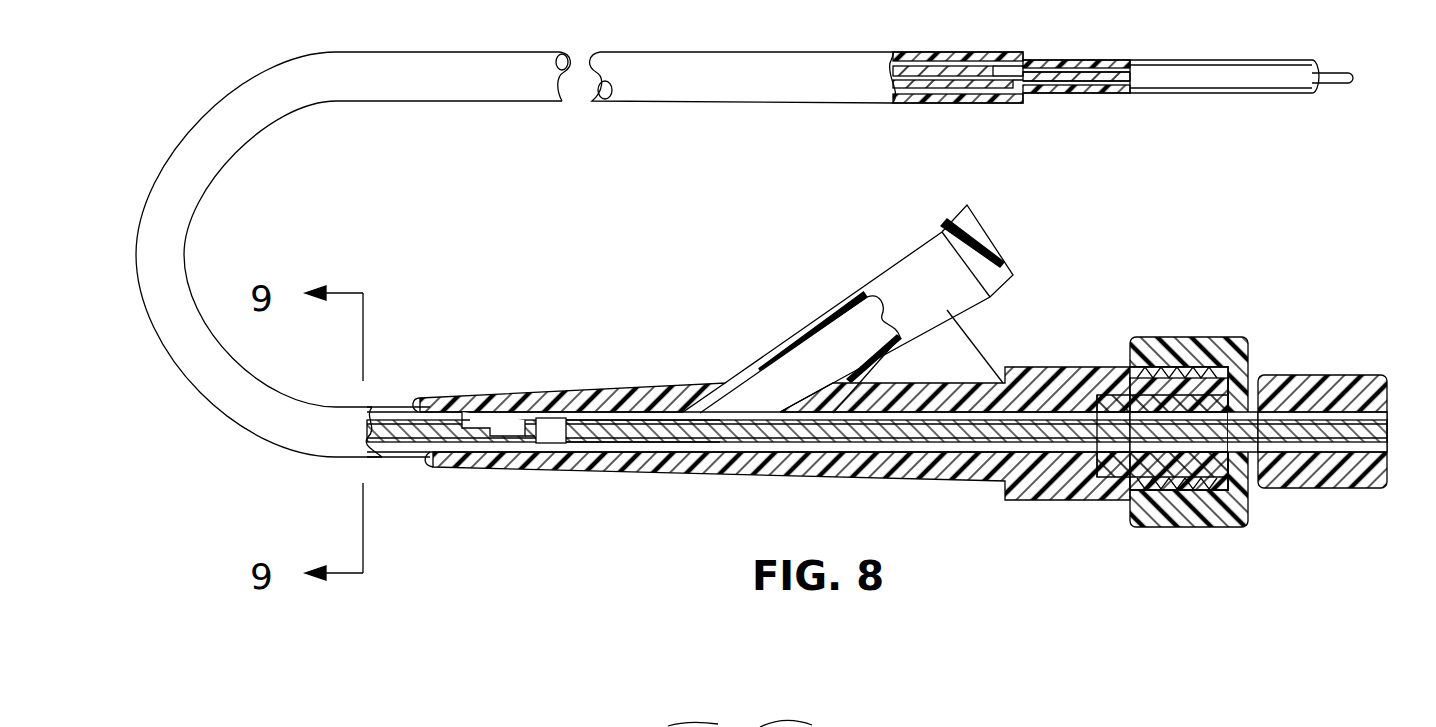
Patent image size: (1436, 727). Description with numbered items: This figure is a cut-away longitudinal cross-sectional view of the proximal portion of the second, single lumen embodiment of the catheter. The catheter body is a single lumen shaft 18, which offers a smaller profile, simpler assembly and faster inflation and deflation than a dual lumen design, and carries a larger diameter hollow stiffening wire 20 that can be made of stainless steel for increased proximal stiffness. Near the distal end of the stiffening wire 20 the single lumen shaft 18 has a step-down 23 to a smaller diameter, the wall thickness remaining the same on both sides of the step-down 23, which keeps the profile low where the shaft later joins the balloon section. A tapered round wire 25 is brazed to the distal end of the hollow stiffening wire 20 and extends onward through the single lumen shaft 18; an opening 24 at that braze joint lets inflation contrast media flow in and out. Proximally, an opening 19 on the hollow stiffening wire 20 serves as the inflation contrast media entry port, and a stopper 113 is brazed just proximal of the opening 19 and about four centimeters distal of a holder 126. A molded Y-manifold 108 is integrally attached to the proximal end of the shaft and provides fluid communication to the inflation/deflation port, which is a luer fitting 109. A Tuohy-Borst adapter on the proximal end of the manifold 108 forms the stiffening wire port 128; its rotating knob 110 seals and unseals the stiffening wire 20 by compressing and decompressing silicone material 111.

The single lumen shaft 18 is at (470, 102).
The opening 19 is at (485, 463).
The stiffening wire 20 is at (638, 446).
The step-down 23 is at (1025, 104).
The opening 24 is at (978, 73).
The tapered round wire 25 is at (1340, 83).
The molded Y-manifold 108 is at (600, 389).
The luer fitting 109 is at (1003, 262).
The rotating knob 110 is at (1189, 337).
The silicone material 111 is at (1112, 463).
The stopper 113 is at (545, 443).
The holder 126 is at (1285, 489).
The stiffening wire port 128 is at (1234, 413).